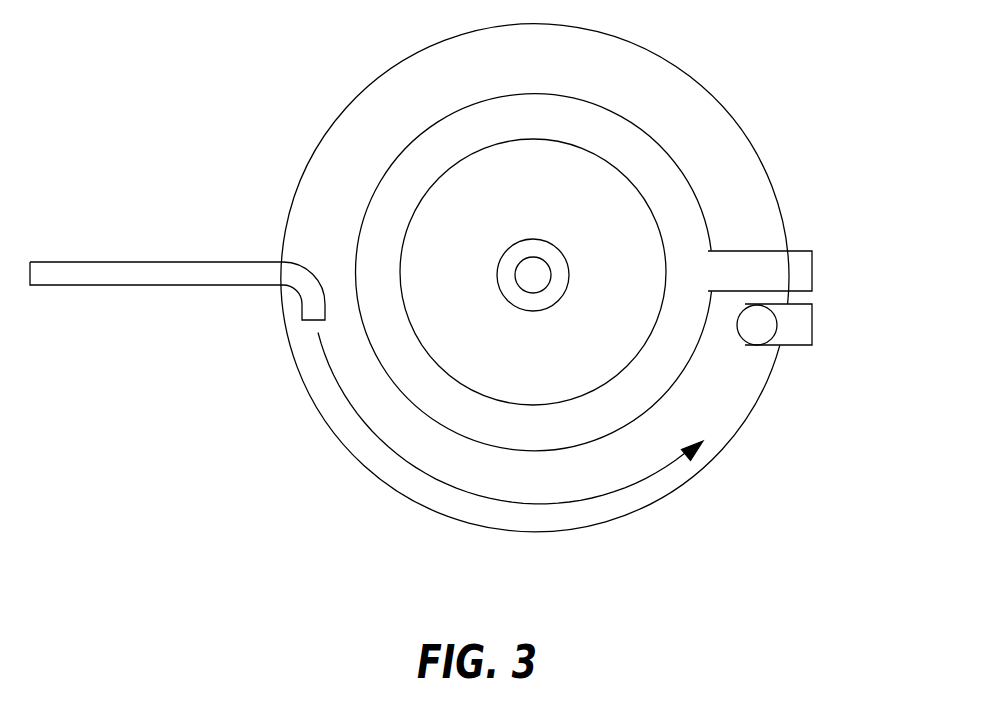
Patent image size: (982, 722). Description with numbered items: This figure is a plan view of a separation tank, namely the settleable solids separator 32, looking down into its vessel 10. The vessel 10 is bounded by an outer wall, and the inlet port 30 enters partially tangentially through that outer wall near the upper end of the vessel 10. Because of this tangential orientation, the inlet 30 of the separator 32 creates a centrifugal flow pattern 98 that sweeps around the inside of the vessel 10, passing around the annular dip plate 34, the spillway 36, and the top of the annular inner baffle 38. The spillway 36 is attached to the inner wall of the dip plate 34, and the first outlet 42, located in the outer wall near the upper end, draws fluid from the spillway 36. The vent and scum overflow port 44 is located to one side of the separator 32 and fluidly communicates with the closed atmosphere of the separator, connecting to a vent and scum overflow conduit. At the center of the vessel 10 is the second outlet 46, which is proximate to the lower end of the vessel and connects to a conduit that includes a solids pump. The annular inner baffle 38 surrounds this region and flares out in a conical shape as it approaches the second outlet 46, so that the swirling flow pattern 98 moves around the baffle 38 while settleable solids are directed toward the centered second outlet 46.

The vessel 10 is at (446, 303).
The inlet port 30 is at (288, 293).
The settleable solids separator 32 is at (753, 145).
The annular dip plate 34 is at (352, 247).
The spillway 36 is at (397, 192).
The annular inner baffle 38 is at (545, 310).
The first outlet 42 is at (763, 263).
The vent and scum overflow port 44 is at (755, 323).
The second outlet 46 is at (535, 278).
The centrifugal flow pattern 98 is at (537, 503).